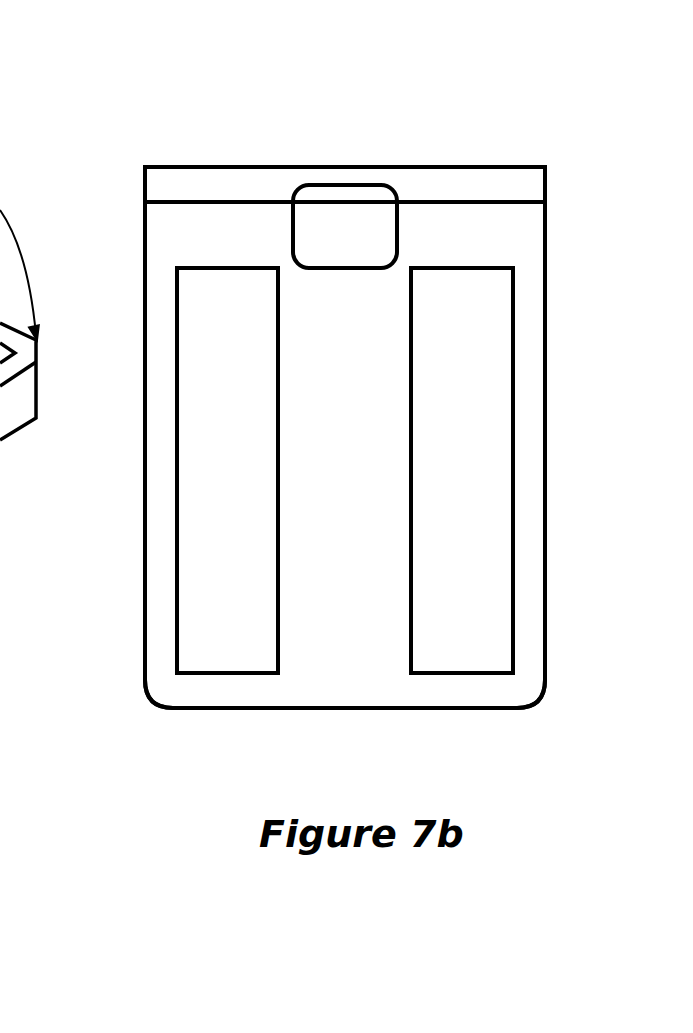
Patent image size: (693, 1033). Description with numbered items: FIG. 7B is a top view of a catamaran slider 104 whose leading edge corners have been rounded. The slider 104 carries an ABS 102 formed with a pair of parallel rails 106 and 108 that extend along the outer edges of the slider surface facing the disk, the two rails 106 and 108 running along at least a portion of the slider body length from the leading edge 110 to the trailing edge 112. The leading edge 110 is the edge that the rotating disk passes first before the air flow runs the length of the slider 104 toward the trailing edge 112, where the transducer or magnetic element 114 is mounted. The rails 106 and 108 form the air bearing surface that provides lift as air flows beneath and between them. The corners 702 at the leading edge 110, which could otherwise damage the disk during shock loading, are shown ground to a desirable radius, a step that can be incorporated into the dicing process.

The ABS 102 is at (363, 446).
The catamaran slider 104 is at (146, 167).
The rail 106 is at (462, 350).
The rail 108 is at (235, 357).
The leading edge 110 is at (380, 710).
The trailing edge 112 is at (285, 167).
The magnetic element 114 is at (360, 230).
The corners 702 is at (152, 700).